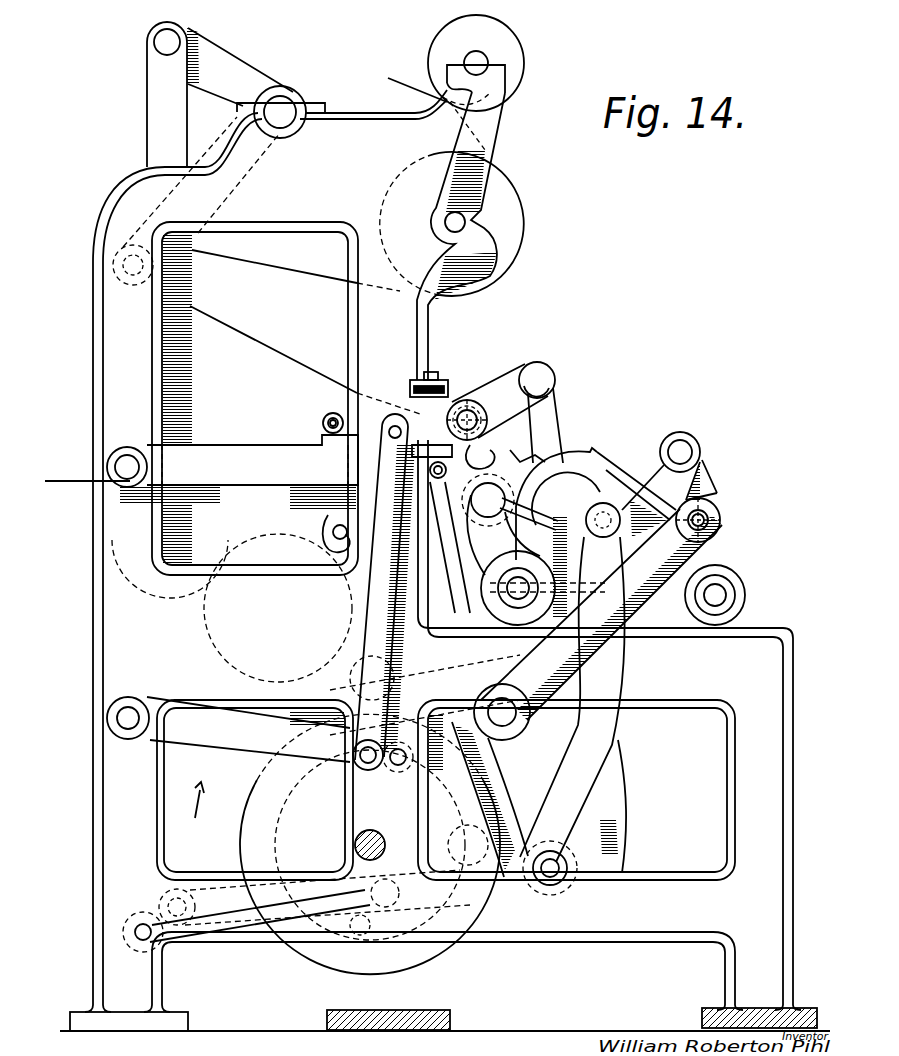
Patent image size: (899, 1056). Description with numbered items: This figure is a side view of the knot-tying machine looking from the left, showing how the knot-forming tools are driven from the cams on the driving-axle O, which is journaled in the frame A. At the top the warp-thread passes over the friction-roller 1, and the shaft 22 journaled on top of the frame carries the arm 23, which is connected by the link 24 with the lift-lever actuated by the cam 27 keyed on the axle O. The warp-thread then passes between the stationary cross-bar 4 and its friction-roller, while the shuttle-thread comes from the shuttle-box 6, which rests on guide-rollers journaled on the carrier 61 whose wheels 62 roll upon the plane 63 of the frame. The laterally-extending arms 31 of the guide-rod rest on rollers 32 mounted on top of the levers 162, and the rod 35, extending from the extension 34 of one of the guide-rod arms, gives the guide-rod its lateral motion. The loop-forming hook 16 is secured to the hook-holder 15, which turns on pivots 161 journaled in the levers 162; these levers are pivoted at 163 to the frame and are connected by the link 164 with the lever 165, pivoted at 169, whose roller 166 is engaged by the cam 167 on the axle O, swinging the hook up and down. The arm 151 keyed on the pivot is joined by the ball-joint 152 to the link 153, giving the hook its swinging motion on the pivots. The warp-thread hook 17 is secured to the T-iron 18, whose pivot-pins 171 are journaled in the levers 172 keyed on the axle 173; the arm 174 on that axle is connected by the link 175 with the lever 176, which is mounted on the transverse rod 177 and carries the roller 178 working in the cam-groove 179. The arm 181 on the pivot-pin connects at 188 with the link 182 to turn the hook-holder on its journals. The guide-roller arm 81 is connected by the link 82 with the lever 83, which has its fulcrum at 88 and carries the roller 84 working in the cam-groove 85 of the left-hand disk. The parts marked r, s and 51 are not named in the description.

The friction-roller 1 is at (526, 226).
The link r is at (485, 153).
The frame A is at (745, 798).
The stationary cross-bar 4 is at (437, 450).
The shuttle-box 6 is at (597, 468).
The hook-holder 15 is at (470, 404).
The loop-forming hook 16 is at (483, 472).
The warp-thread hook 17 is at (703, 463).
The T-iron 18 is at (725, 520).
The shaft 22 is at (283, 107).
The arm 23 is at (228, 60).
The link 24 is at (150, 117).
The cam 27 is at (297, 980).
The laterally-extending arms 31 is at (433, 375).
The rollers 32 is at (417, 379).
The extension 34 is at (333, 413).
The rod 35 is at (323, 423).
The pin 51 is at (437, 478).
The spring latch s is at (525, 460).
The carrier 61 is at (487, 545).
The wheels 62 is at (486, 577).
The plane 63 is at (766, 627).
The arm 81 is at (600, 512).
The link 82 is at (618, 738).
The lever 83 is at (548, 852).
The roller 84 is at (386, 845).
The cam-groove 85 is at (264, 855).
The driving-axle O is at (352, 844).
The fulcrum 88 is at (168, 902).
The arm 151 is at (484, 388).
The ball-joint 152 is at (553, 372).
The link 153 is at (557, 423).
The pivots 161 is at (482, 411).
The levers 162 is at (272, 450).
The pivots 163 is at (127, 455).
The link 164 is at (378, 612).
The lever 165 is at (238, 721).
The roller 166 is at (370, 770).
The cam 167 is at (442, 777).
The pivot 169 is at (128, 708).
The pivot-pins 171 is at (708, 533).
The levers 172 is at (604, 664).
The axle 173 is at (506, 708).
The arm 174 is at (442, 670).
The link 175 is at (450, 698).
The lever 176 is at (190, 948).
The transverse rod 177 is at (140, 942).
The roller 178 is at (330, 900).
The cam-groove 179 is at (365, 920).
The arm 181 is at (707, 490).
The link 182 is at (652, 487).
The connection 188 is at (681, 449).